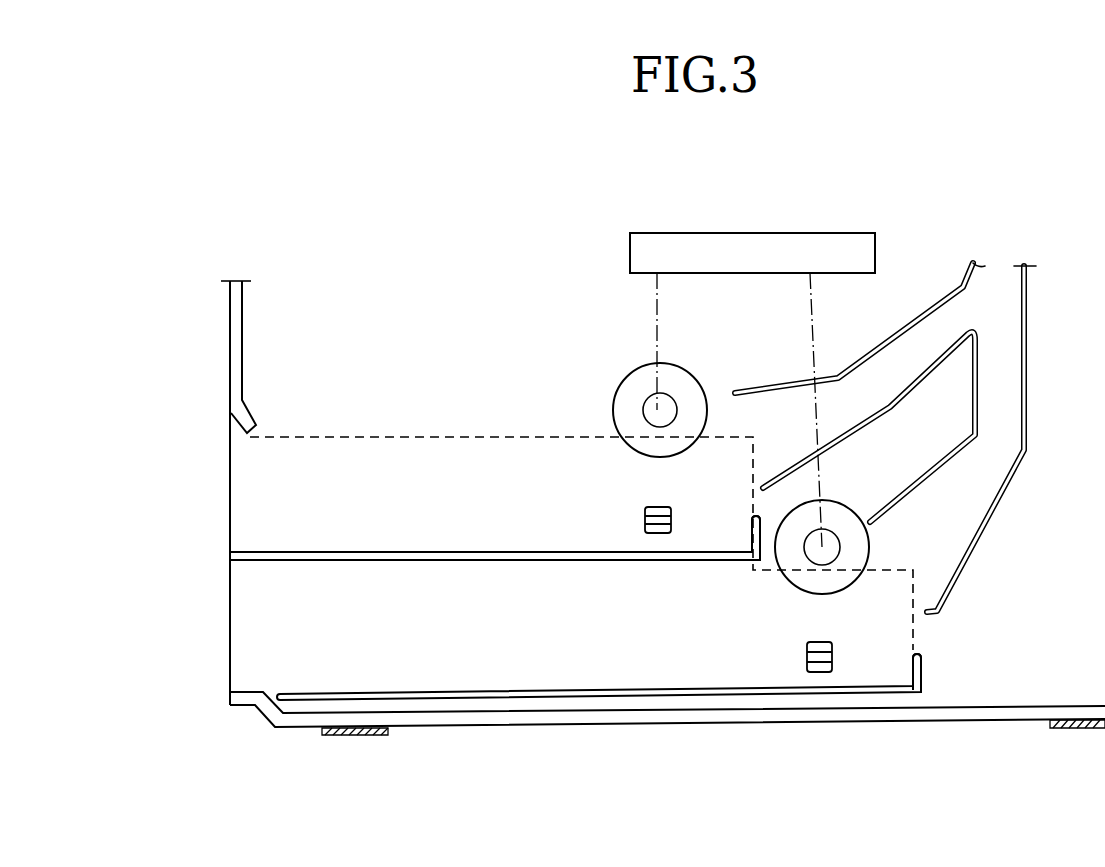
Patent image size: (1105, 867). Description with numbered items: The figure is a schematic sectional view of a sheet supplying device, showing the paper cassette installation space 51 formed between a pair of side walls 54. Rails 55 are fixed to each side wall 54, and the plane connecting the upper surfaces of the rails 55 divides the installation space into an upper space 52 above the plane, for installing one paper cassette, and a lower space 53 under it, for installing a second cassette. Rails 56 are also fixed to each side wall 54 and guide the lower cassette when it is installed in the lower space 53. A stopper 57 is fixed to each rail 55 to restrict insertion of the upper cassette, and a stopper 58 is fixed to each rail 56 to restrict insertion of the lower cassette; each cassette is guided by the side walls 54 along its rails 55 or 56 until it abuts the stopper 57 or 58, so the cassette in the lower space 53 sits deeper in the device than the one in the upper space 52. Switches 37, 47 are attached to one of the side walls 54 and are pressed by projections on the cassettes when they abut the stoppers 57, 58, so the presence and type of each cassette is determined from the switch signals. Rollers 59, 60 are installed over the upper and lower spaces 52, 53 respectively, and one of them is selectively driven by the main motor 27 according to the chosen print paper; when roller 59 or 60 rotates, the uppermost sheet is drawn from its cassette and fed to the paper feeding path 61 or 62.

The main motor 27 is at (862, 233).
The switch 37 is at (659, 507).
The switch 47 is at (820, 641).
The paper cassette installation space 51 is at (162, 453).
The upper space 52 is at (245, 478).
The lower space 53 is at (250, 597).
The side wall 54 is at (272, 348).
The rail 55 is at (293, 553).
The rail 56 is at (337, 692).
The stopper 57 is at (752, 530).
The stopper 58 is at (921, 668).
The roller 59 is at (632, 373).
The roller 60 is at (840, 505).
The paper feeding path 61 is at (881, 363).
The paper feeding path 62 is at (980, 495).